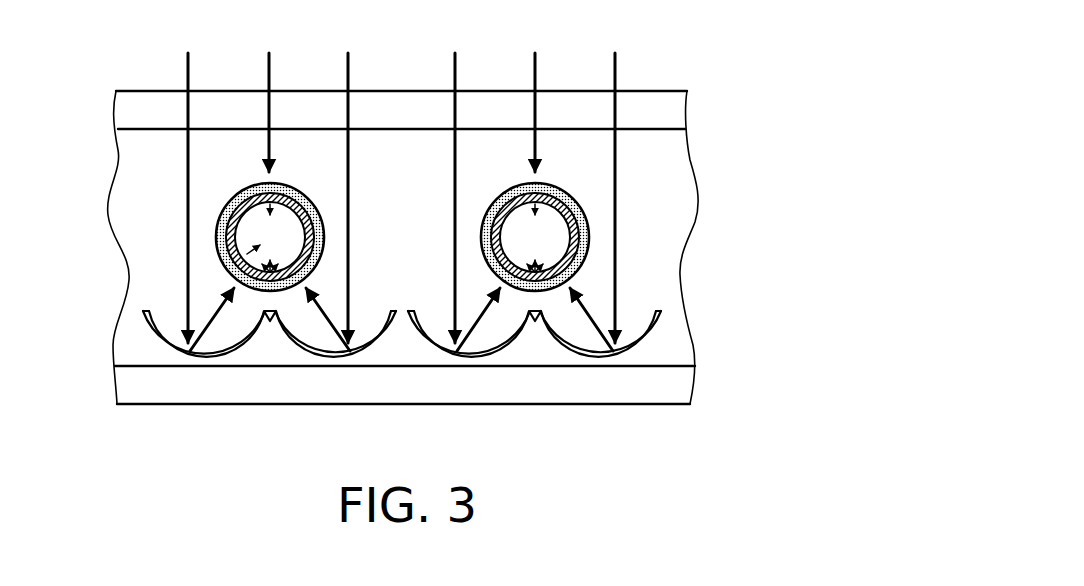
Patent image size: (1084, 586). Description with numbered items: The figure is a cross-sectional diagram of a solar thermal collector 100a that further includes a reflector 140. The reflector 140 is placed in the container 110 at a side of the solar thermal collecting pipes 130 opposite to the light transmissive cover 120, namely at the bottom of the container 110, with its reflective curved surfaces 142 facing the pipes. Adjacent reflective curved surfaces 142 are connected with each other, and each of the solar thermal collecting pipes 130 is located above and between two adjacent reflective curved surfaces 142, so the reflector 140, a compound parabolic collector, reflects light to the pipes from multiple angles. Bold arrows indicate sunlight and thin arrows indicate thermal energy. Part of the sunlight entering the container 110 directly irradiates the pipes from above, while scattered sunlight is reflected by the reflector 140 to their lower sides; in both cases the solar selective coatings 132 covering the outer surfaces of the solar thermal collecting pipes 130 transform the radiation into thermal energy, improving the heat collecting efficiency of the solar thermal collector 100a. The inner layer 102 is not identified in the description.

The solar thermal collector 100a is at (443, 228).
The light emitting element core 102 is at (234, 267).
The container 110 is at (663, 383).
The light transmissive cover 120 is at (650, 108).
The solar thermal collecting pipes 130 is at (311, 242).
The solar selective coatings 132 is at (228, 204).
The reflector 140 is at (461, 304).
The reflective curved surfaces 142 is at (641, 318).